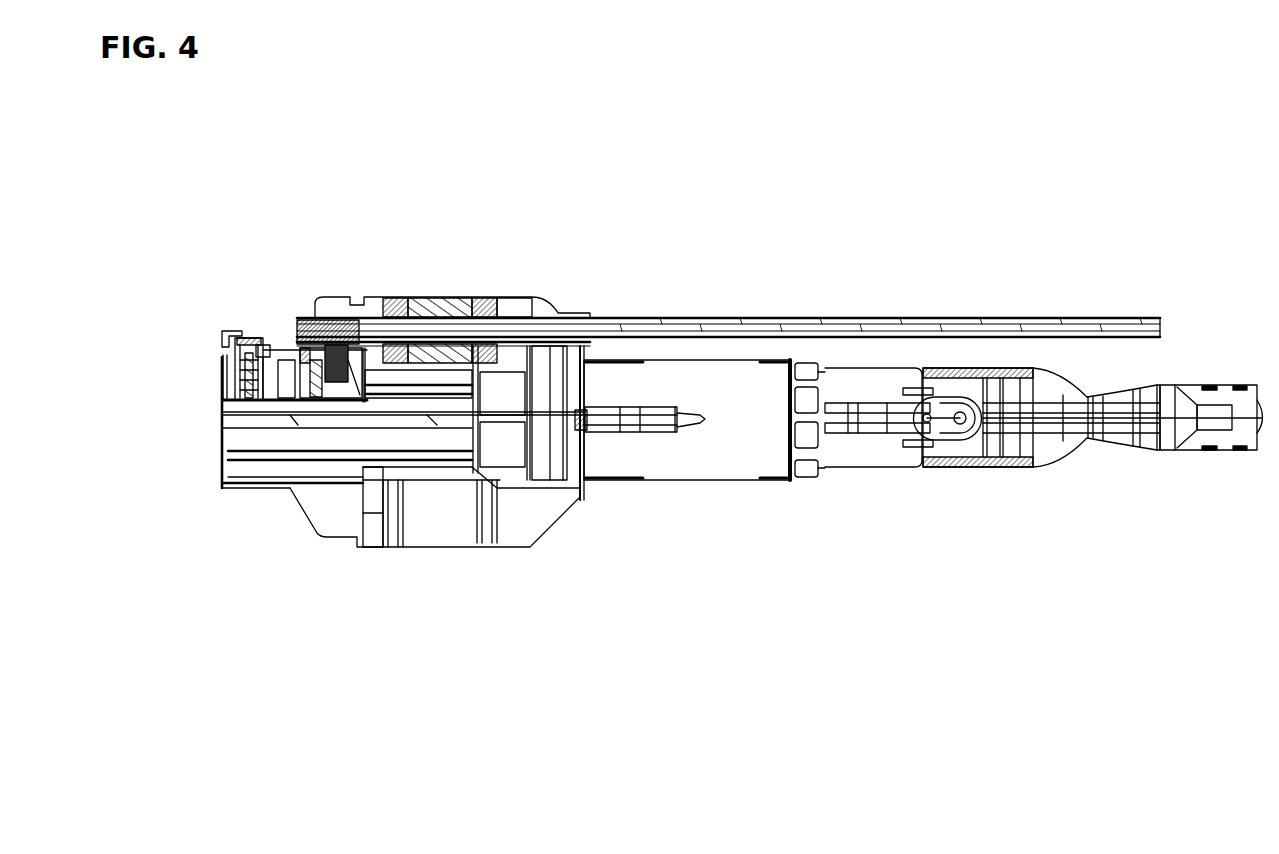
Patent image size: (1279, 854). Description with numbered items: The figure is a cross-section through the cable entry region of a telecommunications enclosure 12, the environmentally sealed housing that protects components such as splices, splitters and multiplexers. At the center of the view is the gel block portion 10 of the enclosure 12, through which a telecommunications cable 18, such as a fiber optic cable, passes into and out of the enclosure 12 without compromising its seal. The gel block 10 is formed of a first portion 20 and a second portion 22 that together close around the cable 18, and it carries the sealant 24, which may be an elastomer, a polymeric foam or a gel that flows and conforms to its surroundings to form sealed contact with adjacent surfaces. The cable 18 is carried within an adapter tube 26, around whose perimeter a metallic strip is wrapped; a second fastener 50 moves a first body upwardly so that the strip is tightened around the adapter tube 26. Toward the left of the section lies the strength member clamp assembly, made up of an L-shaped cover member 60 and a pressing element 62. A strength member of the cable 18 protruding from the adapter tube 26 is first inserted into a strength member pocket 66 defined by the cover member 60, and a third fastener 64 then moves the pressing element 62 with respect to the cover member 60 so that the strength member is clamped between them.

The gel block portion 10 is at (488, 300).
The telecommunications enclosure 12 is at (553, 532).
The telecommunications cable 18 is at (723, 319).
The first portion 20 is at (396, 297).
The second portion 22 is at (492, 358).
The sealant 24 is at (440, 305).
The adapter tube 26 is at (578, 313).
The second fastener 50 is at (305, 360).
The L-shaped cover member 60 is at (220, 331).
The pressing element 62 is at (260, 345).
The third fastener 64 is at (242, 368).
The strength member pocket 66 is at (243, 337).